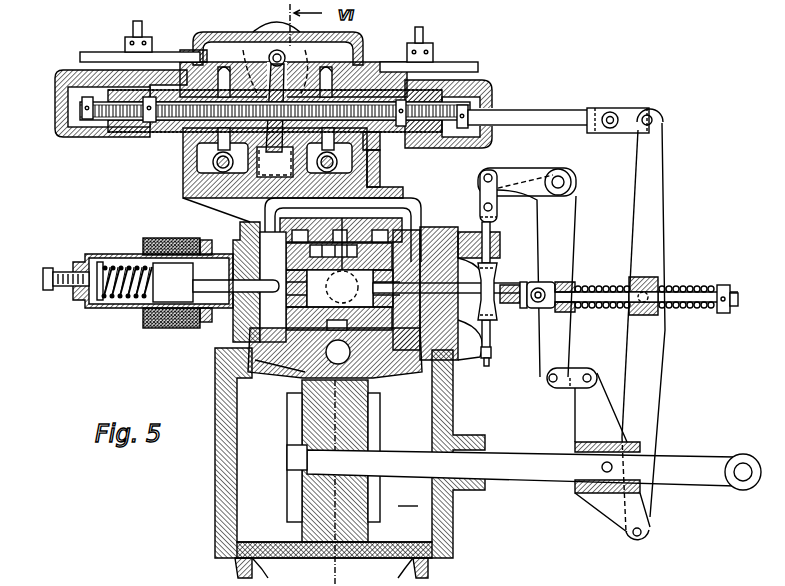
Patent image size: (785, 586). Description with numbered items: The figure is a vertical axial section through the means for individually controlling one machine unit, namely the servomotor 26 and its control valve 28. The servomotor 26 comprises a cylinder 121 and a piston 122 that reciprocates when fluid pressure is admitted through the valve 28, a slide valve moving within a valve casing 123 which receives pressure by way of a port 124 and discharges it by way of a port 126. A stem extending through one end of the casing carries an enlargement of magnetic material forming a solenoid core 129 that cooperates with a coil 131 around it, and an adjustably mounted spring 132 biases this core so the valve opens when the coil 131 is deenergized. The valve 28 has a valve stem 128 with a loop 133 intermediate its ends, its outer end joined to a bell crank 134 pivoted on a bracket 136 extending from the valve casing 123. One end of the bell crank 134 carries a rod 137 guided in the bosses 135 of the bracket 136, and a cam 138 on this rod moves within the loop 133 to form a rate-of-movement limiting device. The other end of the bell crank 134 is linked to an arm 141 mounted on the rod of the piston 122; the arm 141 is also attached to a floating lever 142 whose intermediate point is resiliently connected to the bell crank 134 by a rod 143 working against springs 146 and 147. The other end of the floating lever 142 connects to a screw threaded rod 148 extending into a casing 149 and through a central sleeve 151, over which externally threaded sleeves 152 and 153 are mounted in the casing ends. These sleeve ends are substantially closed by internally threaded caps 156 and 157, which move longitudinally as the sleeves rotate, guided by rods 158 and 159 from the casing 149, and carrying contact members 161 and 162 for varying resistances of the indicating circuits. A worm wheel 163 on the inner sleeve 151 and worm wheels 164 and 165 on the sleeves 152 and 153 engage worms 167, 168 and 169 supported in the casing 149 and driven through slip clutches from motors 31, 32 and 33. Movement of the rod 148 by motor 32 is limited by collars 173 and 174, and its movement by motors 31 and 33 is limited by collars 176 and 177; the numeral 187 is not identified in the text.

The servomotor 26 is at (350, 467).
The control valve 28 is at (290, 312).
The motor 31 is at (205, 160).
The motor 32 is at (287, 26).
The motor 33 is at (368, 160).
The cylinder 121 is at (300, 558).
The piston 122 is at (292, 489).
The valve casing 123 is at (405, 206).
The port 124 is at (335, 353).
The port 126 is at (380, 273).
The valve stem 128 is at (393, 294).
The solenoid core 129 is at (150, 308).
The coil 131 is at (183, 236).
The spring 132 is at (128, 265).
The loop 133 is at (505, 305).
The bell crank 134 is at (569, 252).
The bosses 135 is at (492, 241).
The bracket 136 is at (480, 211).
The rod 137 is at (486, 364).
The cam 138 is at (495, 276).
The arm 141 is at (575, 419).
The floating lever 142 is at (661, 242).
The rod 143 is at (738, 297).
The spring 146 is at (595, 316).
The spring 147 is at (698, 316).
The screw threaded rod 148 is at (562, 114).
The casing 149 is at (368, 175).
The sleeve 151 is at (275, 162).
The externally threaded sleeve 152 is at (169, 133).
The externally threaded sleeve 153 is at (275, 123).
The internally threaded cap 156 is at (56, 78).
The internally threaded cap 157 is at (492, 141).
The rod 158 is at (101, 57).
The rod 159 is at (470, 57).
The contact member 161 is at (142, 21).
The contact member 162 is at (425, 30).
The worm wheel 163 is at (290, 101).
The worm wheel 164 is at (227, 66).
The worm wheel 165 is at (333, 66).
The worm 167 is at (213, 165).
The worm 168 is at (256, 68).
The worm 169 is at (341, 238).
The collar 173 is at (153, 97).
The collar 174 is at (397, 100).
The collar 176 is at (80, 109).
The collar 177 is at (470, 110).
The piston 187 is at (215, 292).